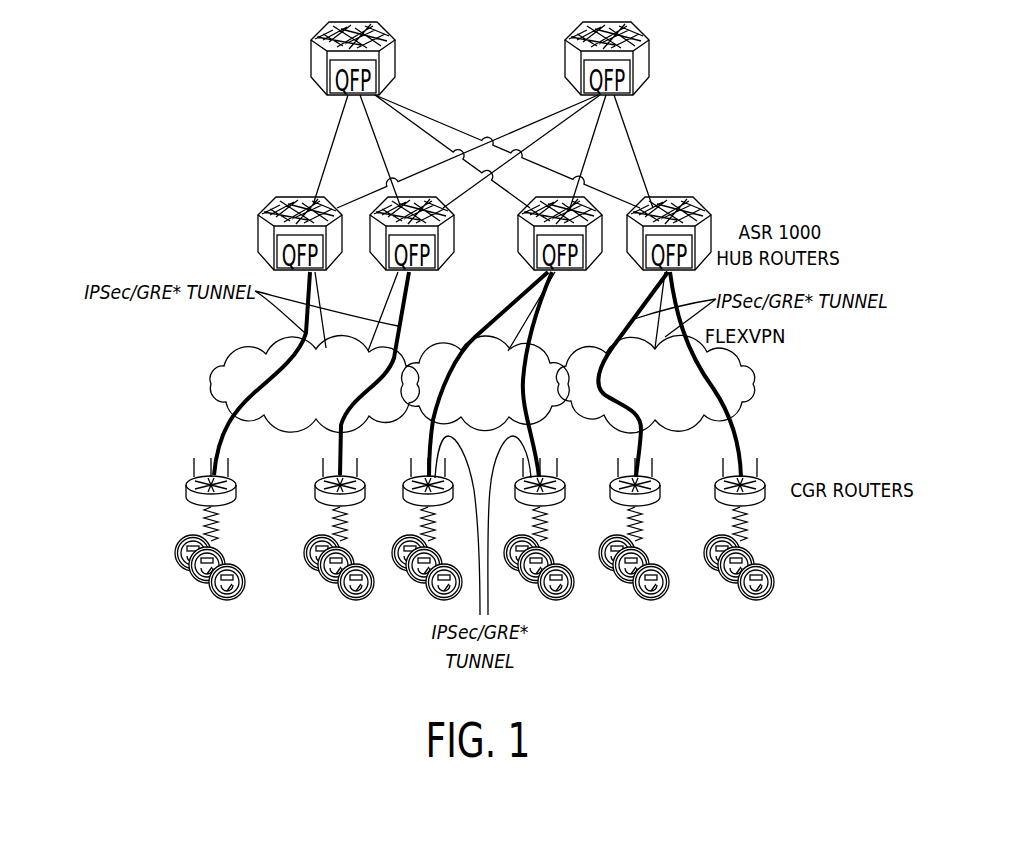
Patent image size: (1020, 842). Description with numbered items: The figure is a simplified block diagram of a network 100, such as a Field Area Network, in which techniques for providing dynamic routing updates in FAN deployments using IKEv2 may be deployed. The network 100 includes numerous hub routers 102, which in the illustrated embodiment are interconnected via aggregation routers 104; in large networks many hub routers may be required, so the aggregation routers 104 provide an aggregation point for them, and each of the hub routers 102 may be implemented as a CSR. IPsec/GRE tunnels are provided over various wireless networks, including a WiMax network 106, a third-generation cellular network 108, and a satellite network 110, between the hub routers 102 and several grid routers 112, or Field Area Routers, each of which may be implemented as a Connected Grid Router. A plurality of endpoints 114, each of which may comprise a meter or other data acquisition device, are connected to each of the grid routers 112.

The network 100 is at (98, 168).
The hub routers 102 is at (258, 237).
The aggregation routers 104 is at (312, 68).
The WiMax 106 is at (214, 380).
The 3G 108 is at (448, 353).
The satellite 110 is at (757, 384).
The grid routers 112 is at (190, 479).
The endpoints 114 is at (193, 588).